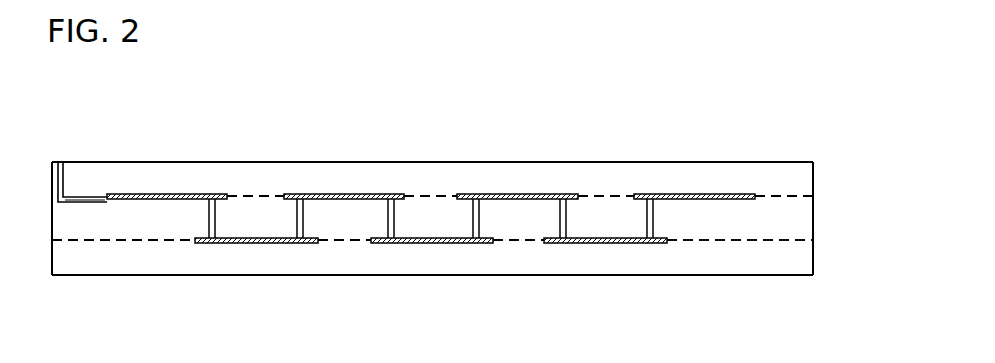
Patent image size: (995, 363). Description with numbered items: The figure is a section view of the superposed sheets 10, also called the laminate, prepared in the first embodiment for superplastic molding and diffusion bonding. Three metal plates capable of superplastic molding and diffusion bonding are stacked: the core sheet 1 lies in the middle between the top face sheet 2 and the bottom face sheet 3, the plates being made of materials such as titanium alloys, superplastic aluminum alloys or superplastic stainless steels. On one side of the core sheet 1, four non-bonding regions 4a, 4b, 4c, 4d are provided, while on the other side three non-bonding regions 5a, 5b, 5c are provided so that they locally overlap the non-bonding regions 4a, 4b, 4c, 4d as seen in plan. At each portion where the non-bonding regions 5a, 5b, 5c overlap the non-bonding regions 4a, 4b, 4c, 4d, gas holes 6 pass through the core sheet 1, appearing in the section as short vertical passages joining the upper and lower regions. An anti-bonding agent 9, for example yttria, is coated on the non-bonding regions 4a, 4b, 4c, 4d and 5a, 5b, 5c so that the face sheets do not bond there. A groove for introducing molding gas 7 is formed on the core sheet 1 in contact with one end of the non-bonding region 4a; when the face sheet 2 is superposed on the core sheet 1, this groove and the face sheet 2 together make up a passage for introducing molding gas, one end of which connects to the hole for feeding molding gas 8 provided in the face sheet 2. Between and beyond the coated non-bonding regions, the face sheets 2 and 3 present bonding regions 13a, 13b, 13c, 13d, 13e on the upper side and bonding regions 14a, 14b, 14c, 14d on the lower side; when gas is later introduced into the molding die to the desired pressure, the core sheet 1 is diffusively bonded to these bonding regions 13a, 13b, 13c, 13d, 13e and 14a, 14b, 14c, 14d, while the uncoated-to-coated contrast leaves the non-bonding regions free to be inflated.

The core sheet 1 is at (792, 215).
The face sheet 2 is at (748, 172).
The face sheet 3 is at (787, 247).
The non-bonding region 4a is at (167, 205).
The non-bonding region 4b is at (347, 205).
The non-bonding region 4c is at (500, 205).
The non-bonding region 4d is at (708, 205).
The non-bonding region 5a is at (263, 237).
The non-bonding region 5b is at (437, 237).
The non-bonding region 5c is at (605, 237).
The gas hole 6 is at (296, 222).
The groove for introducing molding gas 7 is at (79, 196).
The hole for feeding molding gas 8 is at (56, 183).
The anti-bonding agent 9 is at (154, 194).
The superposed sheets 10 is at (834, 124).
The bonding region 13a is at (90, 196).
The bonding region 13b is at (248, 194).
The bonding region 13c is at (418, 194).
The bonding region 13d is at (595, 194).
The bonding region 13e is at (792, 194).
The bonding region 14a is at (105, 243).
The bonding region 14b is at (365, 243).
The bonding region 14c is at (524, 243).
The bonding region 14d is at (724, 243).